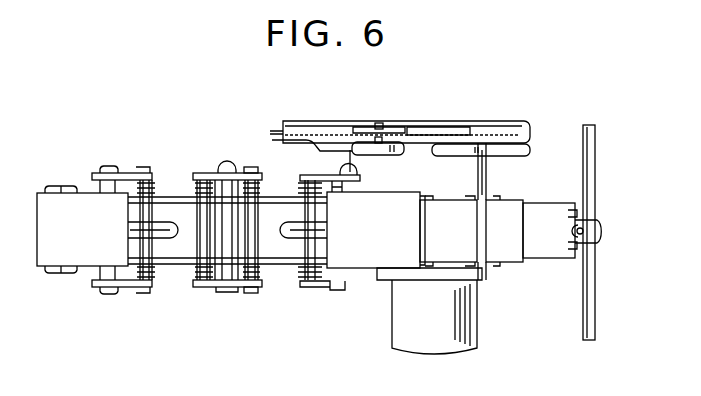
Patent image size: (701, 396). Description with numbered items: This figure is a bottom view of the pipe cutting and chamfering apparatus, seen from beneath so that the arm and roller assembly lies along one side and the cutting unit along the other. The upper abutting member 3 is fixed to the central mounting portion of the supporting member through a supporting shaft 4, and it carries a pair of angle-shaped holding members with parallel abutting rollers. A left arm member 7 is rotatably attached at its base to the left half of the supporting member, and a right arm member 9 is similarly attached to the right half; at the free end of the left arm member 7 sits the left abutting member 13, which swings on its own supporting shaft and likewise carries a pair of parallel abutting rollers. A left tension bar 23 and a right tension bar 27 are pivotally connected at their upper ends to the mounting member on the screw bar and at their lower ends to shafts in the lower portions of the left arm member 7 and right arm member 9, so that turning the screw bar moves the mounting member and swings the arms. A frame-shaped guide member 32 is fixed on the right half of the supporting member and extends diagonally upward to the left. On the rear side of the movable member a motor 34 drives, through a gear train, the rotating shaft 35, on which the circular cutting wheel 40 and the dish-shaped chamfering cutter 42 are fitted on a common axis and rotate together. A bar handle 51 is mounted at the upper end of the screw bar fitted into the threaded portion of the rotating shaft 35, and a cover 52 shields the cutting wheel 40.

The upper abutting member 3 is at (215, 177).
The supporting shaft 4 is at (226, 170).
The left arm member 7 is at (87, 272).
The right arm member 9 is at (375, 265).
The left abutting member 13 is at (130, 177).
The left tension bar 23 is at (176, 240).
The right tension bar 27 is at (290, 240).
The guide member 32 is at (545, 260).
The motor 34 is at (478, 330).
The rotating shaft 35 is at (377, 124).
The cutting wheel 40 is at (275, 128).
The chamfering cutter 42 is at (410, 132).
The bar handle 51 is at (593, 162).
The cover 52 is at (505, 125).